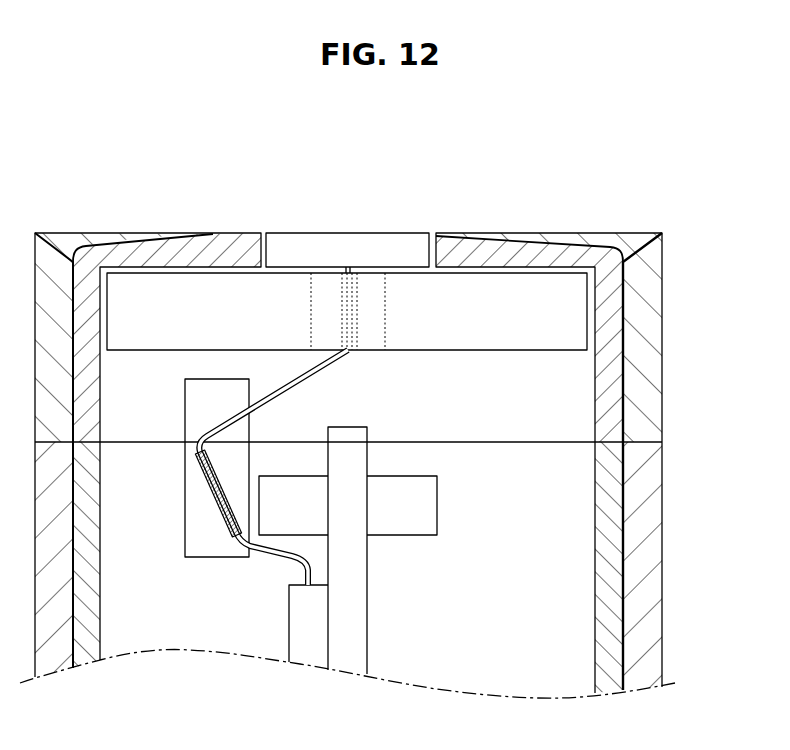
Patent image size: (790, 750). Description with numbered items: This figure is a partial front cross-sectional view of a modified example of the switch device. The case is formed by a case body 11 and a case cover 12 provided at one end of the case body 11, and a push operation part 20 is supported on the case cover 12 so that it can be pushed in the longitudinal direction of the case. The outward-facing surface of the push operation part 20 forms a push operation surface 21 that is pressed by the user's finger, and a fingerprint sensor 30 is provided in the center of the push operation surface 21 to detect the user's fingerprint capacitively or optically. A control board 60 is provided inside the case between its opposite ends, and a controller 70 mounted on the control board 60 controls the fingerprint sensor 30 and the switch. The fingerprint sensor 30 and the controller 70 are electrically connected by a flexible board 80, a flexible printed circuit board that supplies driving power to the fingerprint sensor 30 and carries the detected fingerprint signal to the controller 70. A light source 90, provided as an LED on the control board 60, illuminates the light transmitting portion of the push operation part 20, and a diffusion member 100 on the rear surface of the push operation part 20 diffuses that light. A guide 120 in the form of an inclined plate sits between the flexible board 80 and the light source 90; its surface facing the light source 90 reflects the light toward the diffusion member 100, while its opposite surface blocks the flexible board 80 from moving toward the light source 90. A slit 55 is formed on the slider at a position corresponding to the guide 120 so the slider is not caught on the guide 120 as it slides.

The case body 11 is at (662, 587).
The case cover 12 is at (662, 366).
The push operation part 20 is at (348, 300).
The push operation surface 21 is at (534, 232).
The fingerprint sensor 30 is at (320, 232).
The slit 55 is at (188, 482).
The control board 60 is at (368, 604).
The controller 70 is at (298, 627).
The flexible board 80 is at (306, 387).
The light source 90 is at (426, 510).
The diffusion member 100 is at (517, 338).
The guide 120 is at (213, 502).